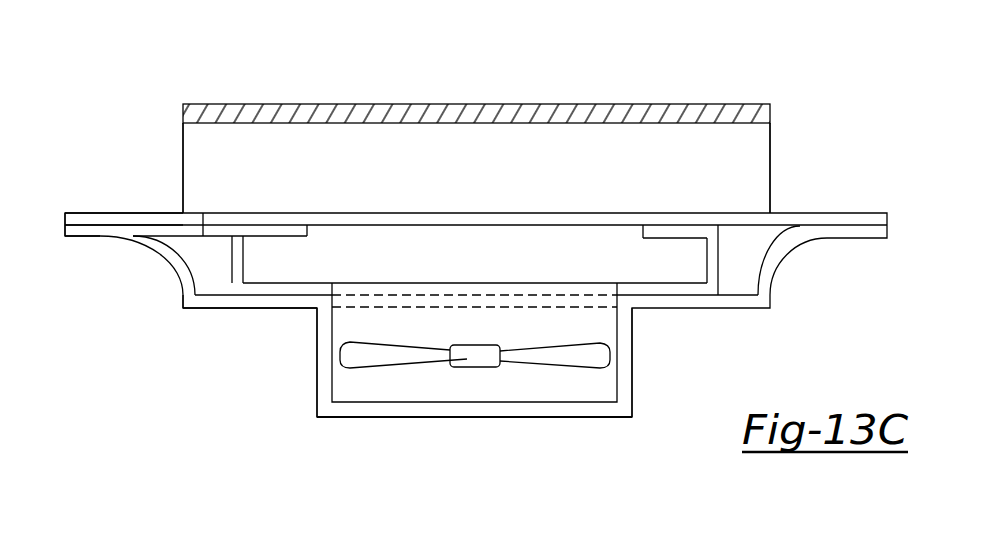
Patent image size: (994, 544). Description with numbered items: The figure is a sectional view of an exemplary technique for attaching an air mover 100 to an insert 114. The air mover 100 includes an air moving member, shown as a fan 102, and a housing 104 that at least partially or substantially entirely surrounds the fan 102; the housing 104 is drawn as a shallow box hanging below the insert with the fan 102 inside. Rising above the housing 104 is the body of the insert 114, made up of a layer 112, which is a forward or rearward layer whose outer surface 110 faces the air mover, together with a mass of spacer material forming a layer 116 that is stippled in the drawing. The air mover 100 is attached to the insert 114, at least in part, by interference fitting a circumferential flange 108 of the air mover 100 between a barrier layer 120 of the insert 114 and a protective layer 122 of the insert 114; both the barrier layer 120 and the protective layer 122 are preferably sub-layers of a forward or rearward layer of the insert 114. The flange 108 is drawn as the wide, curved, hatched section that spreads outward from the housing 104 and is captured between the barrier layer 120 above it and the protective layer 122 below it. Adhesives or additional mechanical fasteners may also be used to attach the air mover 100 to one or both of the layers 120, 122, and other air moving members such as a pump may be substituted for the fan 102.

The air mover 100 is at (650, 410).
The fan 102 is at (580, 358).
The housing 104 is at (632, 362).
The flange 108 is at (688, 262).
The layer 110 is at (92, 240).
The layer 112 is at (97, 212).
The insert 114 is at (552, 83).
The layer of spacer material 116 is at (766, 153).
The barrier layer 120 is at (205, 231).
The protective layer 122 is at (212, 309).